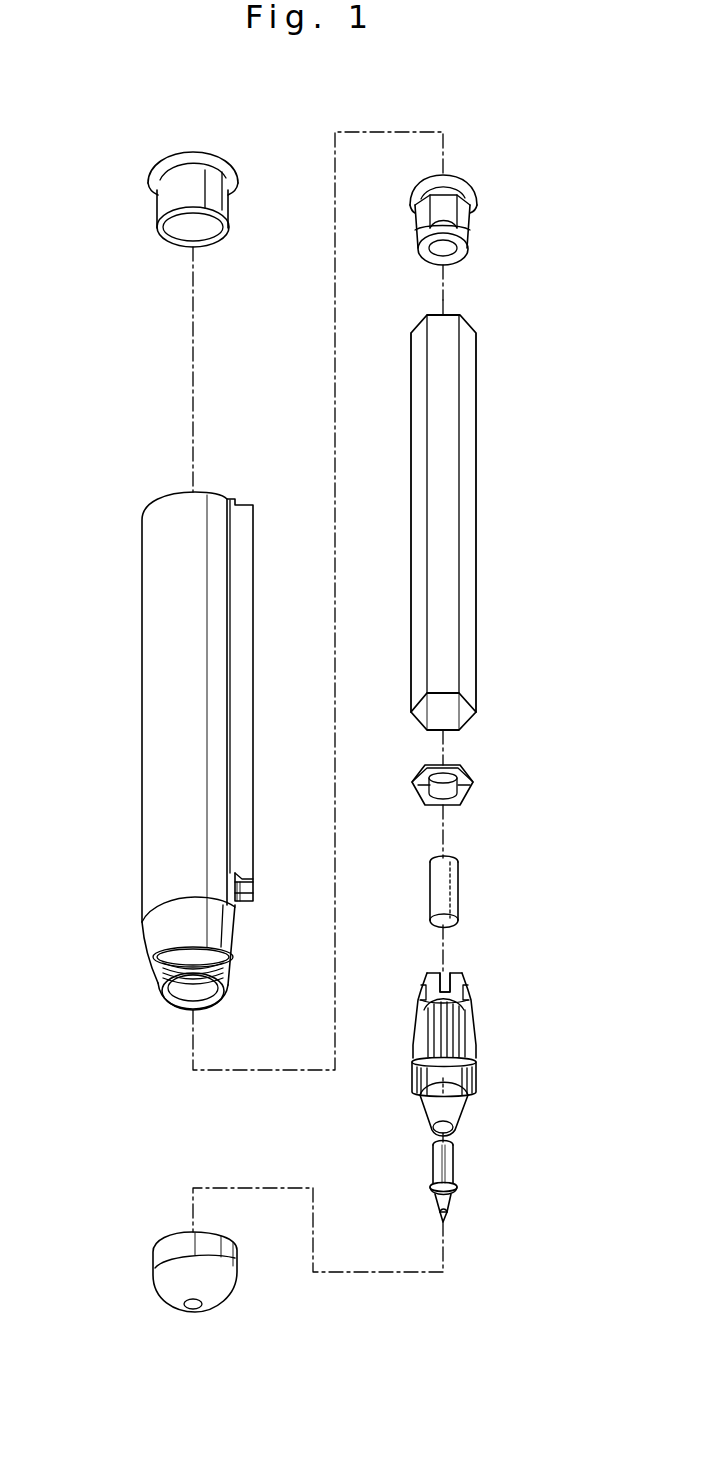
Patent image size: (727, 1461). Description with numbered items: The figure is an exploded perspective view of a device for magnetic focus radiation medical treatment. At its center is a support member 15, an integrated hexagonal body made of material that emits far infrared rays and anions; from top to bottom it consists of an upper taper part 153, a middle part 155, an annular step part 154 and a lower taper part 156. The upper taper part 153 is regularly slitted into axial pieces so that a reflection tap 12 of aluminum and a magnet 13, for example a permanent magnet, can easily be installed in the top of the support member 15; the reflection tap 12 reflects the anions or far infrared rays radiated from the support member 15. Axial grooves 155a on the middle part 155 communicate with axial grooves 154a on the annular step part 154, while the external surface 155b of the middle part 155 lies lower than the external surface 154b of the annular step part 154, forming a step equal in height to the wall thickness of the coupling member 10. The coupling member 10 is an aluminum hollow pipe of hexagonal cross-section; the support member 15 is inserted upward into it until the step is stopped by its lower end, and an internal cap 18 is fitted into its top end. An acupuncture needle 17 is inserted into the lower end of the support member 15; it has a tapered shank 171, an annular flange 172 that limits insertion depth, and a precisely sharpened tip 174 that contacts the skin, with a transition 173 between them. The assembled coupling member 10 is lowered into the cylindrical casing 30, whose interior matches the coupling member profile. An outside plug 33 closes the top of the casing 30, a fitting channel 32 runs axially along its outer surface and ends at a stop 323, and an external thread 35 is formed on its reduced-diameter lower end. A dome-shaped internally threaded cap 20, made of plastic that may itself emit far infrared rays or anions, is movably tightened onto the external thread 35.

The coupling member 10 is at (467, 447).
The reflection tap 12 is at (472, 783).
The magnet 13 is at (452, 885).
The support member 15 is at (468, 1053).
The upper taper part 153 is at (463, 987).
The annular step part 154 is at (468, 1087).
The axial groove 154a is at (428, 1070).
The external surface 154b is at (442, 1078).
The middle part 155 is at (469, 1017).
The axial groove 155a is at (423, 1017).
The external surface 155b is at (440, 1035).
The lower taper part 156 is at (455, 1110).
The acupuncture needle 17 is at (463, 1212).
The shank 171 is at (435, 1162).
The annular flange 172 is at (457, 1190).
The tip cone 173 is at (449, 1208).
The sharpened tip 174 is at (444, 1223).
The internal cap 18 is at (466, 214).
The internally threaded cap 20 is at (170, 1288).
The casing 30 is at (189, 751).
The fitting channel 32 is at (247, 602).
The stop 323 is at (245, 893).
The outside plug 33 is at (182, 160).
The external thread 35 is at (155, 976).